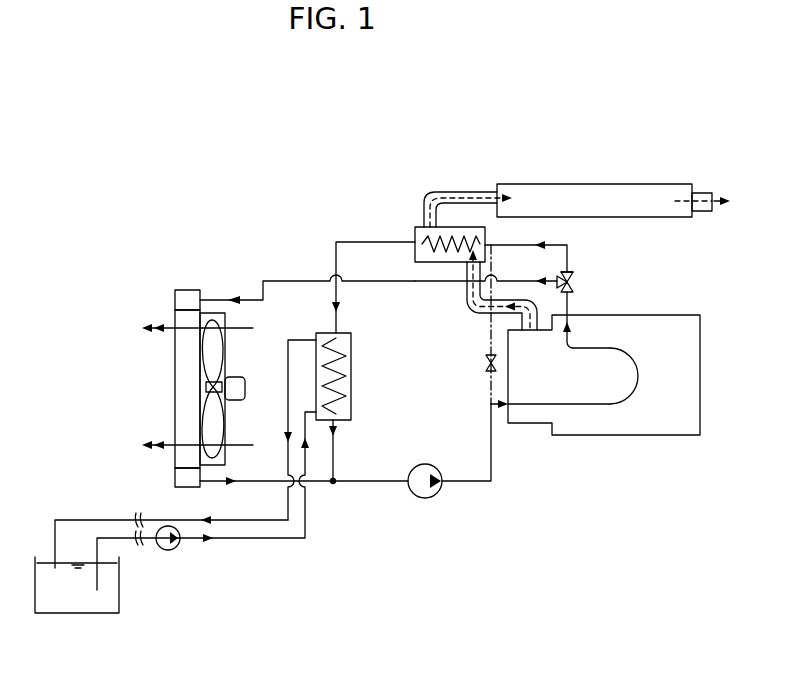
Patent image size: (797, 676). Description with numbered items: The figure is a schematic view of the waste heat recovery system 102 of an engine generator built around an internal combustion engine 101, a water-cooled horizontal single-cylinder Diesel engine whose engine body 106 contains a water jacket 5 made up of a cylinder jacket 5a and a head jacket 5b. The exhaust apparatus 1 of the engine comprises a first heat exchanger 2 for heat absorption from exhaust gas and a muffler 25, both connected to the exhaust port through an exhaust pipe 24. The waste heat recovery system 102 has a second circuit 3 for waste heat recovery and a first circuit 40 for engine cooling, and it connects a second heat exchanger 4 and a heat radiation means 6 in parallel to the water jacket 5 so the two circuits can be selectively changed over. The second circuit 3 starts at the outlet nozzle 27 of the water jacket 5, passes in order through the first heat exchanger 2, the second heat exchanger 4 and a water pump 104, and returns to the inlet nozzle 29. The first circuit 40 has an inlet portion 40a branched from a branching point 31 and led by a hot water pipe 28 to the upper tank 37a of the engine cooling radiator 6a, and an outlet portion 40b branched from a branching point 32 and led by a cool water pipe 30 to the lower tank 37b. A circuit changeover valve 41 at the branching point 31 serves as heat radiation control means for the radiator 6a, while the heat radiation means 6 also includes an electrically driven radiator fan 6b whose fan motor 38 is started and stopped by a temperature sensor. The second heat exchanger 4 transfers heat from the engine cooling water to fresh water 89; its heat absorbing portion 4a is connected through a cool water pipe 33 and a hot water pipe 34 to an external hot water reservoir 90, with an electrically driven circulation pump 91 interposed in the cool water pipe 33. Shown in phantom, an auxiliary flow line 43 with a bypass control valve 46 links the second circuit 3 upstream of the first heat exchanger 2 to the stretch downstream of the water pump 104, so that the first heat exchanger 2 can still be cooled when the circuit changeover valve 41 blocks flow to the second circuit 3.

The exhaust apparatus 1 is at (461, 186).
The first heat exchanger 2 is at (415, 230).
The second circuit 3 is at (351, 230).
The second heat exchanger 4 is at (362, 360).
The heat absorbing portion 4a is at (350, 400).
The water jacket 5 is at (645, 360).
The cylinder jacket 5a is at (588, 348).
The head jacket 5b is at (578, 406).
The heat radiation means 6 is at (128, 340).
The engine cooling radiator 6a is at (166, 357).
The radiator fan 6b is at (205, 408).
The exhaust pipe 24 is at (470, 302).
The muffler 25 is at (553, 183).
The outlet nozzle 27 is at (569, 313).
The hot water pipe 28 is at (300, 276).
The inlet nozzle 29 is at (513, 402).
The cool water pipe 30 is at (248, 480).
The branching point 31 is at (576, 282).
The branching point 32 is at (334, 485).
The cool water pipe 33 is at (255, 541).
The hot water pipe 34 is at (231, 519).
The upper tank 37a is at (176, 297).
The lower tank 37b is at (176, 481).
The fan motor 38 is at (238, 378).
The first circuit 40 is at (406, 292).
The inlet portion 40a is at (526, 258).
The outlet portion 40b is at (318, 485).
The circuit changeover valve 41 is at (576, 273).
The auxiliary flow line 43 is at (488, 342).
The bypass control valve 46 is at (487, 370).
The fresh water 89 is at (78, 605).
The hot water reservoir 90 is at (119, 605).
The circulation pump 91 is at (172, 550).
The internal combustion engine 101 is at (669, 296).
The waste heat recovery system 102 is at (311, 210).
The water pump 104 is at (422, 465).
The engine body 106 is at (650, 437).